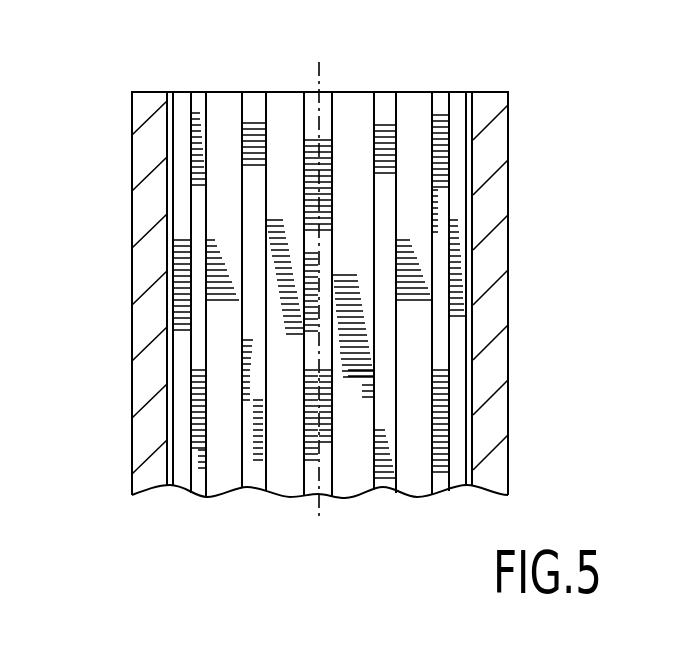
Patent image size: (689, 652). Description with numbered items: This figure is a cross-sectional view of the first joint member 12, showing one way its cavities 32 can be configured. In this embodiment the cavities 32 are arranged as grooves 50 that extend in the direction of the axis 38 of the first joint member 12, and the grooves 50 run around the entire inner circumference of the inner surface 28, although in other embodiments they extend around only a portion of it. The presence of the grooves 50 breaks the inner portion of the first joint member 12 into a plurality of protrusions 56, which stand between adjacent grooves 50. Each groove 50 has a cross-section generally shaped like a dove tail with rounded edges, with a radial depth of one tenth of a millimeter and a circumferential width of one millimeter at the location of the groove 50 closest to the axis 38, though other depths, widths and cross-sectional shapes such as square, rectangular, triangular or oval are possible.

The first joint member 12 is at (505, 126).
The inner surface 28 is at (467, 467).
The cavities 32 is at (325, 142).
The axis 38 is at (318, 82).
The grooves 50 is at (312, 138).
The protrusions 56 is at (282, 162).